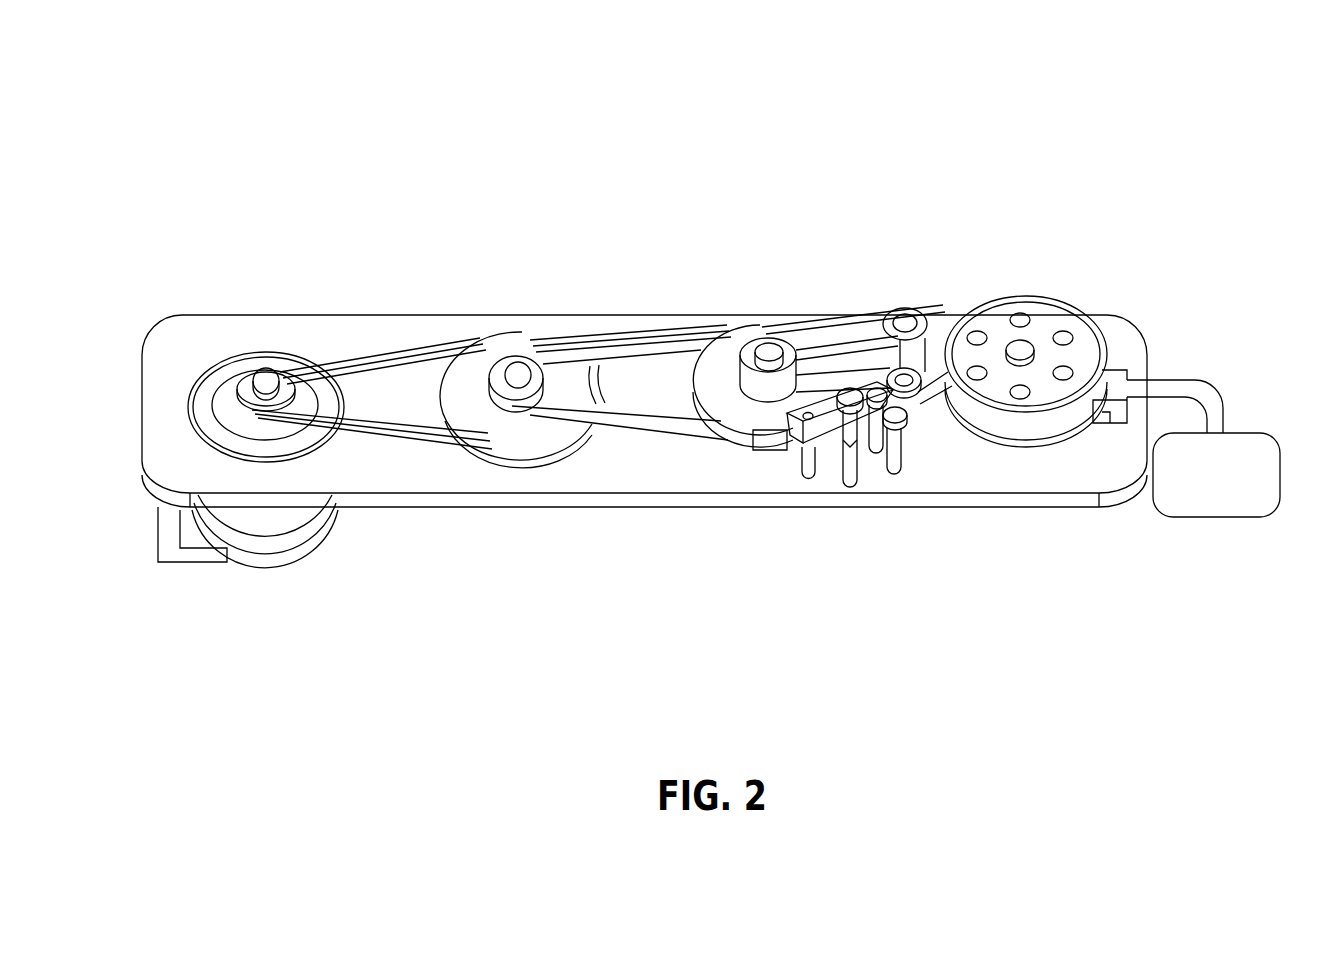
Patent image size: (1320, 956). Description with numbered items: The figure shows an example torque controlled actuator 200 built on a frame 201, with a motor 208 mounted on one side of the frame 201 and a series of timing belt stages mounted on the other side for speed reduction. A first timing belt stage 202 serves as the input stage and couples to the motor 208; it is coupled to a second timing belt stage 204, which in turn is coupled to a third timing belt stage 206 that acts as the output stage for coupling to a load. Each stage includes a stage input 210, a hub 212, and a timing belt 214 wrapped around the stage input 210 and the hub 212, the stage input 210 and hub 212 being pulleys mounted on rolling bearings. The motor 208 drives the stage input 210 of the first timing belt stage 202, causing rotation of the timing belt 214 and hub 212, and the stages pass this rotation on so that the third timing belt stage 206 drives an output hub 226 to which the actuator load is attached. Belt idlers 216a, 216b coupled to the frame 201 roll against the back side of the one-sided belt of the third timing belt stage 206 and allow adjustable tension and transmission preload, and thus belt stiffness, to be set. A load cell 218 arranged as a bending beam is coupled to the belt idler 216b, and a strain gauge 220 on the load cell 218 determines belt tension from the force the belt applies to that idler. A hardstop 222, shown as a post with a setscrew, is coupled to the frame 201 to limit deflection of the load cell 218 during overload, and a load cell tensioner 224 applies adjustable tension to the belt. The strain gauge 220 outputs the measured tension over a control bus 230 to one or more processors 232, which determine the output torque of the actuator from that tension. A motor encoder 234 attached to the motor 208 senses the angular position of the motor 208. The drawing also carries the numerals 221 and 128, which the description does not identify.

The torque controlled actuator 200 is at (203, 118).
The frame 201 is at (644, 423).
The first timing belt stage 202 is at (372, 311).
The second timing belt stage 204 is at (637, 332).
The third timing belt stage 206 is at (864, 333).
The motor 208 is at (339, 512).
The stage input 210 is at (264, 370).
The hub 212 is at (465, 368).
The timing belt 214 is at (411, 345).
The belt idler 216a is at (930, 308).
The belt idler 216b is at (921, 410).
The load cell 218 is at (797, 464).
The strain gauge 220 is at (874, 448).
The third pulley 221 is at (762, 344).
The hardstop 222 is at (908, 469).
The load cell tensioner 224 is at (839, 493).
The output hub 226 is at (1073, 331).
The control bus 230 is at (1181, 371).
The processor(s) 232 is at (1232, 496).
The motor encoder 234 is at (229, 557).
The mounting bracket 128 is at (1096, 412).